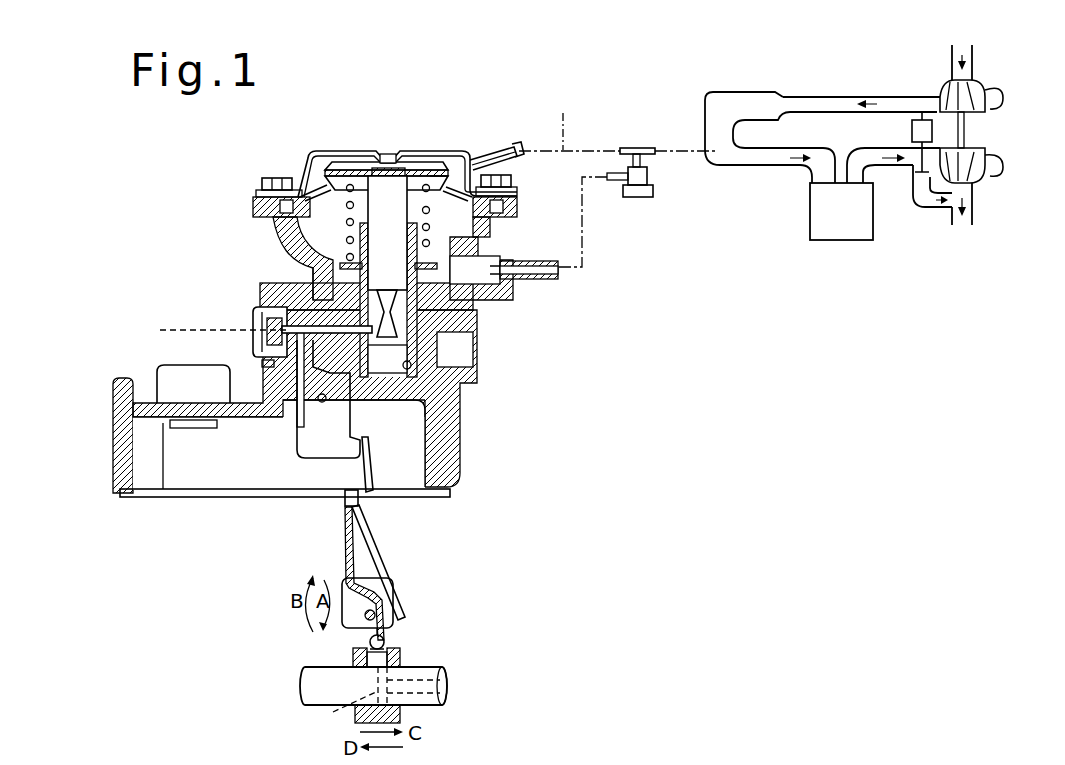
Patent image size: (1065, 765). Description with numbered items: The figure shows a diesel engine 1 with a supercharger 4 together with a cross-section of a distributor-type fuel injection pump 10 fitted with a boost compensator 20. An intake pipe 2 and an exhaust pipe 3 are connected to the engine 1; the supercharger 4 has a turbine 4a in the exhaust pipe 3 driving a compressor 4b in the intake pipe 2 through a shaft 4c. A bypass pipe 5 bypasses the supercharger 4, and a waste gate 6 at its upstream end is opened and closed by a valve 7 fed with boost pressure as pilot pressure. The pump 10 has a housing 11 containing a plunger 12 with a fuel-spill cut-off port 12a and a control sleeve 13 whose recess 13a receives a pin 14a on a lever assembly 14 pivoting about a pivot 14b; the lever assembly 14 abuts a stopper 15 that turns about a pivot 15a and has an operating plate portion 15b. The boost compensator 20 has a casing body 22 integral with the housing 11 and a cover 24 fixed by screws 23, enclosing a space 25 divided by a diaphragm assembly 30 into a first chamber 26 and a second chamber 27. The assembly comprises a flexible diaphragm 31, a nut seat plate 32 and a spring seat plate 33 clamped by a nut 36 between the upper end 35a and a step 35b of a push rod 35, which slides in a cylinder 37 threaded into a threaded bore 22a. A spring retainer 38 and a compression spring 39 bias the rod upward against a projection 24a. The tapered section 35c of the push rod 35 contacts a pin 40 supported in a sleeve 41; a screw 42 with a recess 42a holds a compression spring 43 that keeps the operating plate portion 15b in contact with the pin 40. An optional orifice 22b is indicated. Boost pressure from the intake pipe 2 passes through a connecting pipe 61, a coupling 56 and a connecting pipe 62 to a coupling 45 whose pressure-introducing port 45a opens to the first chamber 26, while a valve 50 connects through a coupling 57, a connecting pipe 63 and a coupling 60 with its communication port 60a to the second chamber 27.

The diesel engine 1 is at (808, 212).
The intake pipe 2 is at (745, 167).
The exhaust pipe 3 is at (893, 180).
The supercharger 4 is at (995, 131).
The turbine 4a is at (990, 162).
The compressor 4b is at (990, 100).
The shaft 4c is at (966, 133).
The bypass pipe 5 is at (936, 210).
The waste gate 6 is at (918, 165).
The valve 7 is at (920, 120).
The distributor-type fuel injection pump 10 is at (110, 443).
The housing 11 is at (462, 415).
The plunger 12 is at (431, 667).
The fuel-spill cut-off port 12a is at (368, 699).
The control sleeve 13 is at (400, 650).
The recess 13a is at (385, 635).
The lever assembly 14 is at (392, 565).
The pin 14a is at (354, 655).
The pivot 14b is at (376, 612).
The stopper 15 is at (290, 372).
The pivot 15a is at (328, 402).
The operating plate portion 15b is at (262, 362).
The boost compensator 20 is at (408, 128).
The casing body 22 is at (330, 248).
The threaded bore 22a is at (432, 375).
The orifice 22b is at (292, 290).
The screws 23 is at (268, 178).
The cover 24 is at (330, 156).
The projection 24a is at (393, 166).
The space 25 is at (485, 216).
The first chamber 26 is at (468, 151).
The second chamber 27 is at (320, 225).
The diaphragm assembly 30 is at (342, 167).
The flexible diaphragm 31 is at (317, 178).
The nut seat plate 32 is at (433, 172).
The spring seat plate 33 is at (296, 212).
The push rod 35 is at (372, 270).
The upper end 35a is at (358, 182).
The step 35b is at (416, 176).
The tapered section 35c is at (296, 300).
The nut 36 is at (386, 154).
The cylinder 37 is at (440, 310).
The spring retainer 38 is at (362, 264).
The compression spring 39 is at (346, 236).
The pin 40 is at (288, 306).
The sleeve 41 is at (386, 378).
The screw 42 is at (268, 322).
The recess 42a is at (204, 330).
The compression spring 43 is at (284, 346).
The coupling 45 is at (505, 135).
The pressure-introducing port 45a is at (480, 162).
The valve 50 is at (633, 138).
The coupling 56 is at (625, 148).
The coupling 57 is at (612, 181).
The coupling 60 is at (520, 279).
The communication port 60a is at (490, 272).
The connecting pipe 61 is at (668, 150).
The connecting pipe 62 is at (563, 118).
The connecting pipe 63 is at (585, 236).